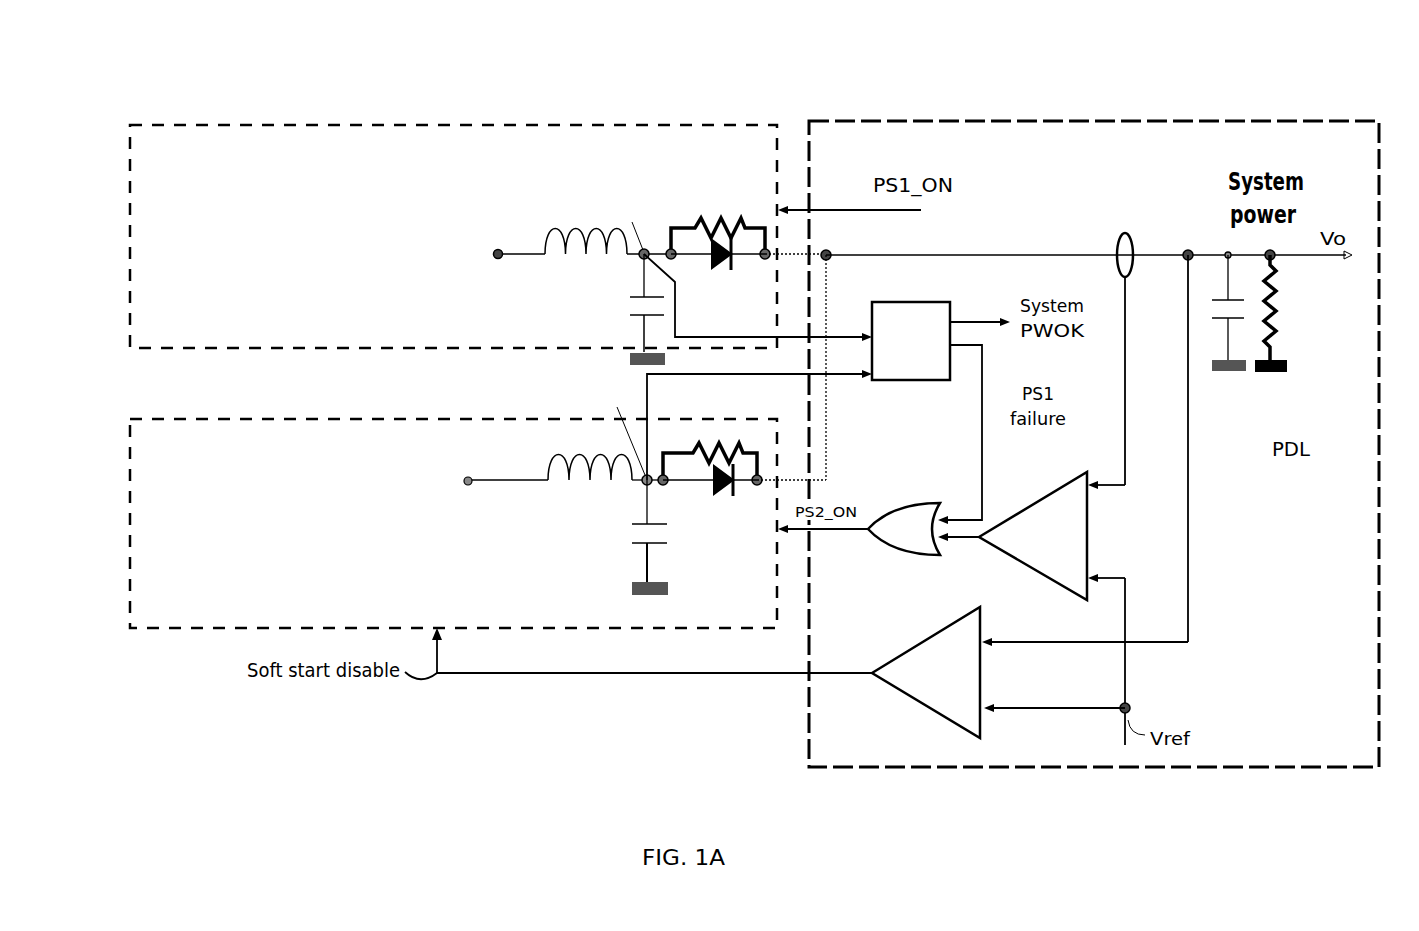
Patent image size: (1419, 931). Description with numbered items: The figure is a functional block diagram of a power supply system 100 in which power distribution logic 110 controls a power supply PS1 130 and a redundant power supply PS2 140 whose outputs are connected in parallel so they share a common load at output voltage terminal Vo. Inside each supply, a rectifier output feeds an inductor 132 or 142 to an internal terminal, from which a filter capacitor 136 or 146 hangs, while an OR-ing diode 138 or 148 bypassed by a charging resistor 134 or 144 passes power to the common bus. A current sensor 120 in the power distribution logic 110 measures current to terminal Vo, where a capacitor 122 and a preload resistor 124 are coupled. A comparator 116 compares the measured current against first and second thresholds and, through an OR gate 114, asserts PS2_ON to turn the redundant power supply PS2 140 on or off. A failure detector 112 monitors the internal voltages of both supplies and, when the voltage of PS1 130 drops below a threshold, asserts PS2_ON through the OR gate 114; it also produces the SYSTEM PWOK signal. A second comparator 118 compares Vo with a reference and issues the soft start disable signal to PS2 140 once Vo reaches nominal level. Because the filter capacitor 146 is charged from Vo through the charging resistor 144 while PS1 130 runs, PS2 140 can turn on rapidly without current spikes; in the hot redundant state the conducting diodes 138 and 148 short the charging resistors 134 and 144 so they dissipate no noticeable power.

The power supply system 100 is at (1138, 66).
The power distribution logic 110 is at (982, 120).
The failure detector 112 is at (941, 413).
The OR gate 114 is at (928, 500).
The comparator 116 is at (1060, 492).
The comparator 118 is at (924, 650).
The current sensor 120 is at (1112, 242).
The capacitor 122 is at (1222, 300).
The preload resistor 124 is at (1278, 300).
The power supply PS1 130 is at (501, 236).
The inductor 132 is at (583, 230).
The charging resistor CHR1 134 is at (718, 222).
The filter capacitor 136 is at (638, 297).
The diode 138 is at (723, 268).
The redundant power supply PS2 140 is at (501, 499).
The inductor 142 is at (597, 455).
The charging resistor CHR2 144 is at (710, 455).
The filter capacitor 146 is at (638, 522).
The diode 148 is at (722, 494).